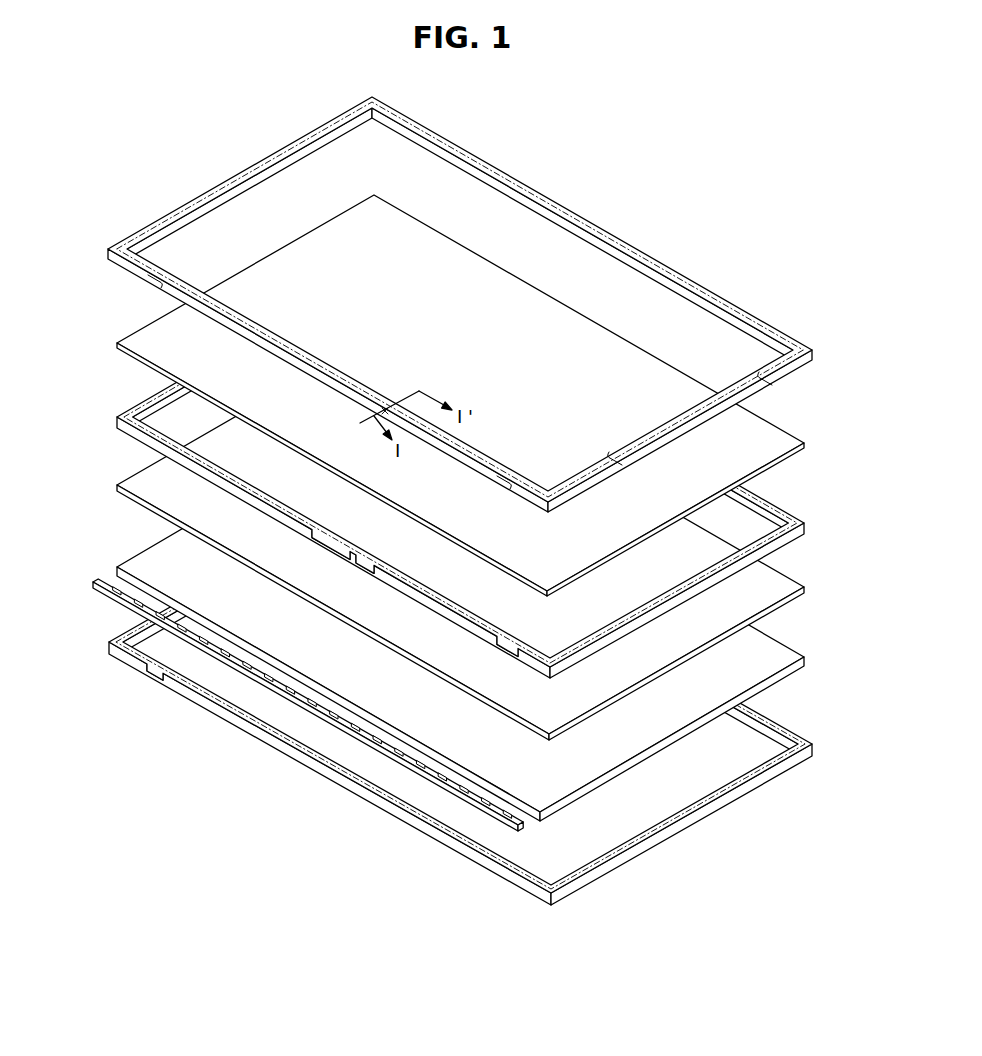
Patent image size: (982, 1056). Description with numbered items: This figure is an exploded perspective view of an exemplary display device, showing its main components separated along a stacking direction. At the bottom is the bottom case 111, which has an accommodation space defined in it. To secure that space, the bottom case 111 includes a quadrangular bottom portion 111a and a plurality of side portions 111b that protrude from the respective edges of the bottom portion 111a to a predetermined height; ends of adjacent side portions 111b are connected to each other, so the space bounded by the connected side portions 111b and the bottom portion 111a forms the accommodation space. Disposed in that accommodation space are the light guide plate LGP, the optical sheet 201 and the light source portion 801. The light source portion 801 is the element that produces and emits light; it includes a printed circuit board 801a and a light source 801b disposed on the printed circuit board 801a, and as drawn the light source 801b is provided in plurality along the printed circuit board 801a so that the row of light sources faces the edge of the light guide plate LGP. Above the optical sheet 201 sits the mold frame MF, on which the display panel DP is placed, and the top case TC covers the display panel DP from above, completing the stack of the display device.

The top case TC is at (800, 358).
The display panel DP is at (765, 425).
The mold frame MF is at (777, 503).
The optical sheet 201 is at (775, 573).
The light guide plate LGP is at (773, 643).
The bottom frame 111 is at (459, 699).
The bottom portion 111a is at (345, 755).
The side portion 111b is at (138, 618).
The light source portion 801 is at (308, 760).
The printed circuit board 801a is at (417, 772).
The light source 801b is at (460, 786).